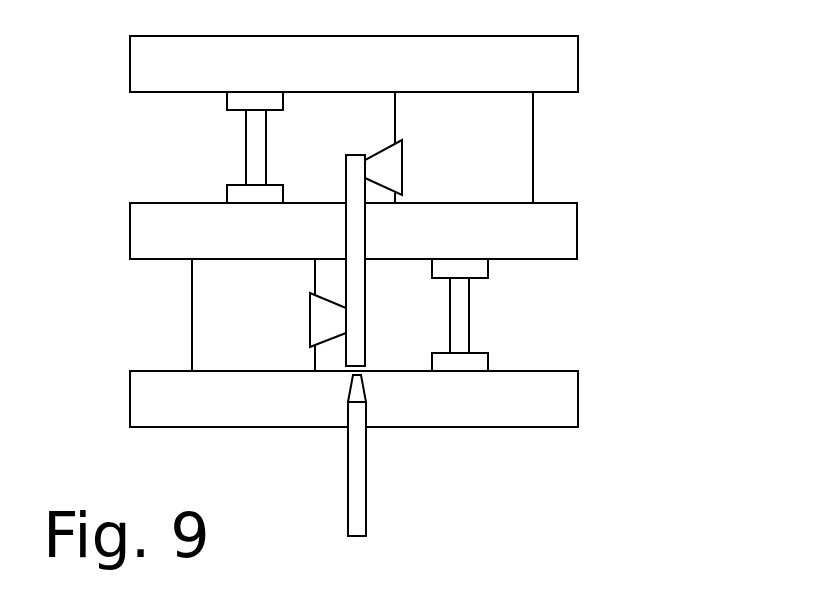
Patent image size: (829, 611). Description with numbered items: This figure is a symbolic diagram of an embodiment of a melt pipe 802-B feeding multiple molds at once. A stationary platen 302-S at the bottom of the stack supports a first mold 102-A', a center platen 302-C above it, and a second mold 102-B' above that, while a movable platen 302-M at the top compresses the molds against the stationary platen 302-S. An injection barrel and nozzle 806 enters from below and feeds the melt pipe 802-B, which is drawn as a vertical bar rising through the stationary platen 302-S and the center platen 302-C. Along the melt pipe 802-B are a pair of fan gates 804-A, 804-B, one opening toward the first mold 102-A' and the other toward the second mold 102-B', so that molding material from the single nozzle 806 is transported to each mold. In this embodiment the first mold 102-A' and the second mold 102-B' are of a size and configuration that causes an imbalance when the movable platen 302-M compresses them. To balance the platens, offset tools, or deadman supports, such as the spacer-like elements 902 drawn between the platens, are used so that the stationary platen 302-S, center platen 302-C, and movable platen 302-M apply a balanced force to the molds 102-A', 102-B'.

The movable platen 302-M is at (578, 72).
The center platen 302-C is at (577, 241).
The stationary platen 302-S is at (578, 408).
The spacer 902 is at (246, 140).
The second mold 102-B' is at (540, 146).
The first mold 102-A' is at (179, 315).
The fan gate 804-A is at (307, 328).
The fan gate 804-B is at (402, 185).
The melt pipe 802-B is at (345, 250).
The injection barrel and nozzle 806 is at (346, 492).